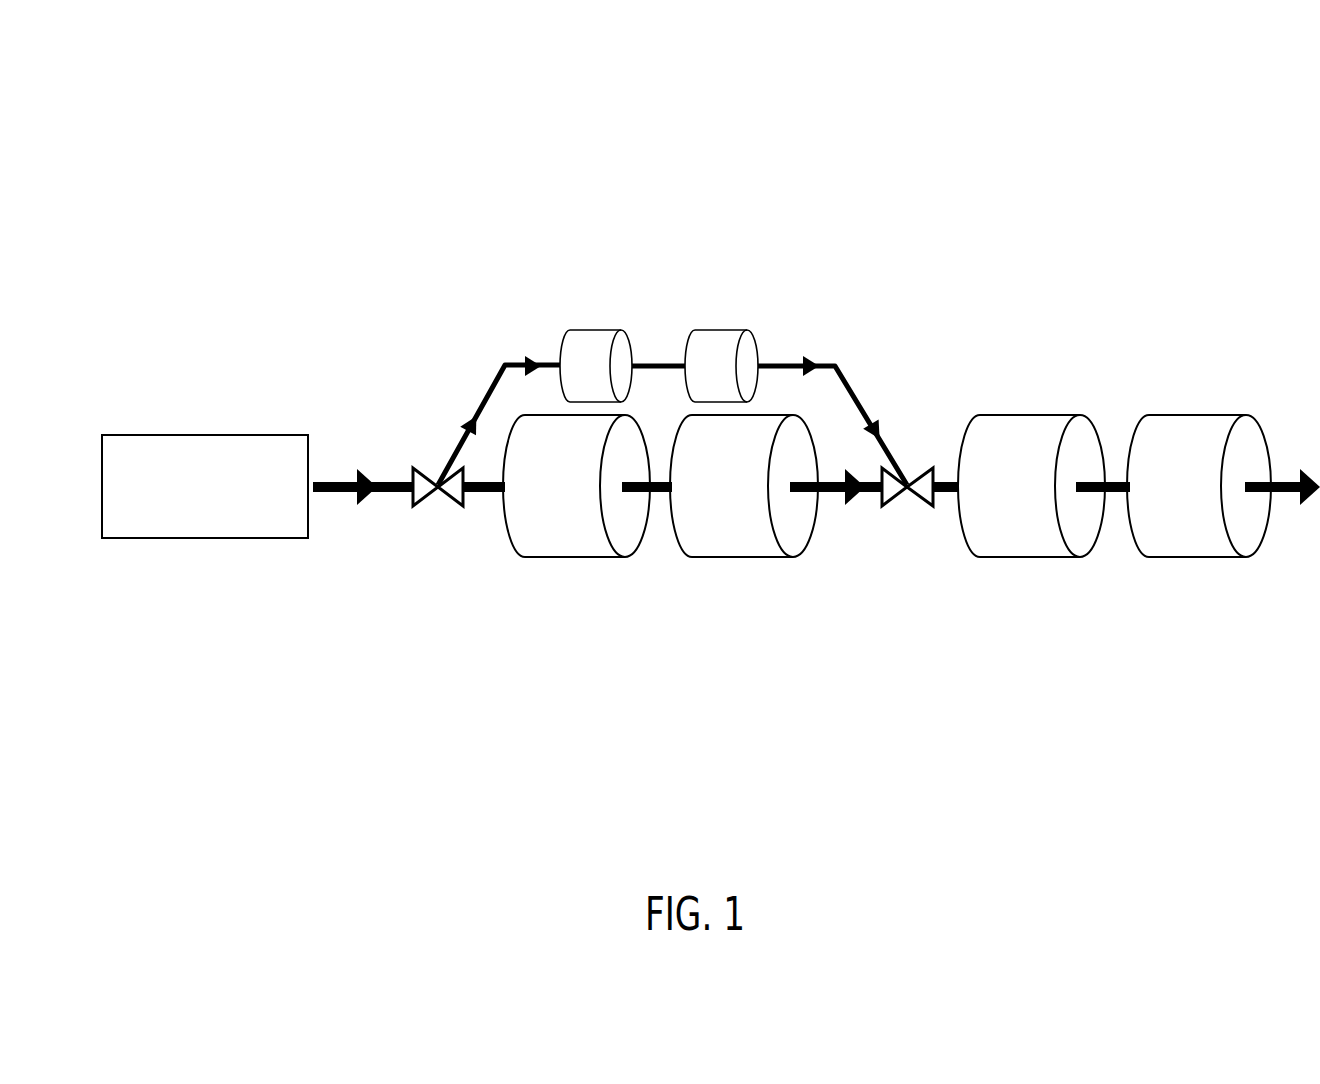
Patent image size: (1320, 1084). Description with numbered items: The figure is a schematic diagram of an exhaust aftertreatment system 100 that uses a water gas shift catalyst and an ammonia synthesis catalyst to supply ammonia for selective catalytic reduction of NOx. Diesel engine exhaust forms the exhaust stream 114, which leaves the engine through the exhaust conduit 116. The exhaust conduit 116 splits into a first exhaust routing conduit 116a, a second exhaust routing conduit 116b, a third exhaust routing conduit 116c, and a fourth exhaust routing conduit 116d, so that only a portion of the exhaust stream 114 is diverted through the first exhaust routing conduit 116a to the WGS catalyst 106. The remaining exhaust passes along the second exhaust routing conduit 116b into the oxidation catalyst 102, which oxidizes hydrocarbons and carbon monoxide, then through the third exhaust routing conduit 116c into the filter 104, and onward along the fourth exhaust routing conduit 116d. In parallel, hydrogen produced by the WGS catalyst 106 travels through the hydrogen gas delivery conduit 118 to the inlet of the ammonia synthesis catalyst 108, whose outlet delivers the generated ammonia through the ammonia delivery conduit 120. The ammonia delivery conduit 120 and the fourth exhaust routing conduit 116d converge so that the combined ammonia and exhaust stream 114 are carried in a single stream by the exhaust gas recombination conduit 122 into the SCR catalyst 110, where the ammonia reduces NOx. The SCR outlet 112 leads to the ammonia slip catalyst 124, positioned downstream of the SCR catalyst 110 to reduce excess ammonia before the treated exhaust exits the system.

The exhaust aftertreatment system 100 is at (143, 145).
The oxidation catalyst 102 is at (578, 560).
The filter 104 is at (740, 560).
The WGS catalyst 106 is at (596, 354).
The ammonia synthesis catalyst 108 is at (721, 354).
The SCR catalyst 110 is at (1031, 505).
The SCR outlet line 112 is at (1104, 445).
The exhaust stream 114 is at (207, 424).
The exhaust conduit 116 is at (388, 478).
The first exhaust routing conduit 116a is at (491, 420).
The second exhaust routing conduit 116b is at (475, 508).
The third exhaust routing conduit 116c is at (653, 532).
The fourth exhaust routing conduit 116d is at (837, 503).
The hydrogen gas delivery conduit 118 is at (658, 353).
The ammonia delivery conduit 120 is at (832, 414).
The exhaust gas recombination conduit 122 is at (920, 474).
The ammonia slip catalyst 124 is at (1223, 472).